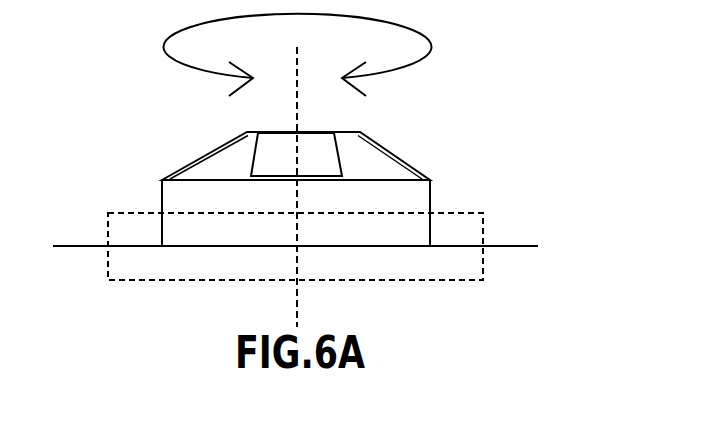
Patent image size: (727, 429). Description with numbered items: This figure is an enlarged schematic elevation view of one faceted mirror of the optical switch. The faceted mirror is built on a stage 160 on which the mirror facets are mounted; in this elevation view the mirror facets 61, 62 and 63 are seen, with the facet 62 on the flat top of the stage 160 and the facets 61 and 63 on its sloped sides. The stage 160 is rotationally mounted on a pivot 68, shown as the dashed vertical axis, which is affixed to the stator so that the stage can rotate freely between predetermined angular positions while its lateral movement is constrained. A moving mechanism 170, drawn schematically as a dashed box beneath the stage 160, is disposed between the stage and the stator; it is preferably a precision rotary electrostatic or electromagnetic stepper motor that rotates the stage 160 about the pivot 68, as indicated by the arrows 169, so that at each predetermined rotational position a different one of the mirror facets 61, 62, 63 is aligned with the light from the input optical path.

The arrows 169 is at (431, 50).
The pivot 68 is at (298, 60).
The stage 160 is at (432, 202).
The mirror facet 61 is at (209, 152).
The mirror facet 63 is at (384, 150).
The mirror facet 62 is at (307, 140).
The moving mechanism 170 is at (484, 268).